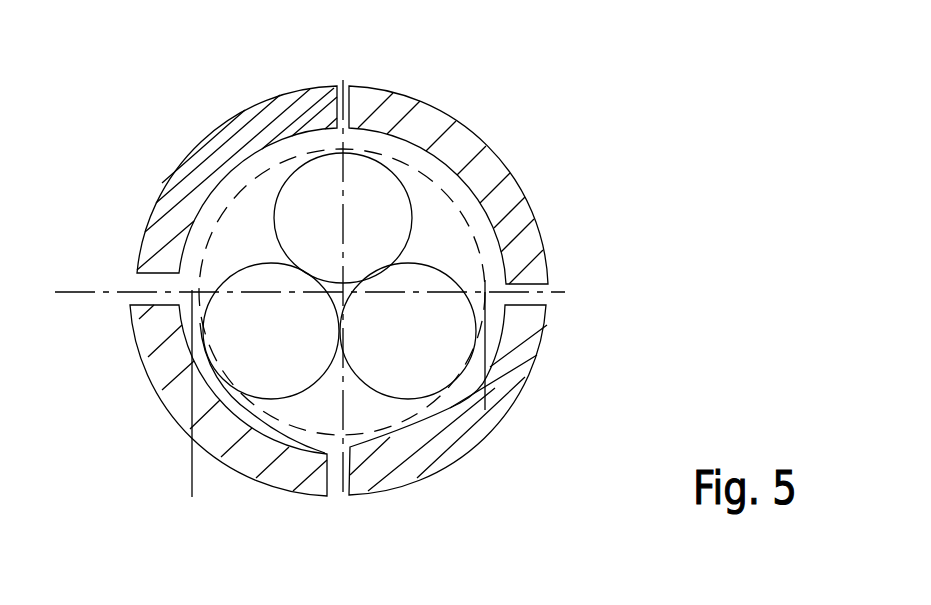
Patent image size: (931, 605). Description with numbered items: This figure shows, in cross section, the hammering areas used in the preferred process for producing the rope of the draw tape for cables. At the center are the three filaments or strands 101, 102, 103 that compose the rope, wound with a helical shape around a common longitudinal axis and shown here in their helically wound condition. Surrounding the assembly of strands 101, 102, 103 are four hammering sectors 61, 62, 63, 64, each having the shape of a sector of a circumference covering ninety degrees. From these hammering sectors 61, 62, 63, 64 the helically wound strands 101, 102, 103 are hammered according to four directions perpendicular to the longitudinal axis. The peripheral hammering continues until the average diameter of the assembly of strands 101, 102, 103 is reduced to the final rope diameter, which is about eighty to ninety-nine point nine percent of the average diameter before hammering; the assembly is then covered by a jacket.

The hammering sector 61 is at (243, 102).
The hammering sector 62 is at (418, 88).
The hammering sector 63 is at (530, 379).
The hammering sector 64 is at (180, 415).
The strand 101 is at (396, 174).
The strand 102 is at (420, 366).
The strand 103 is at (232, 348).